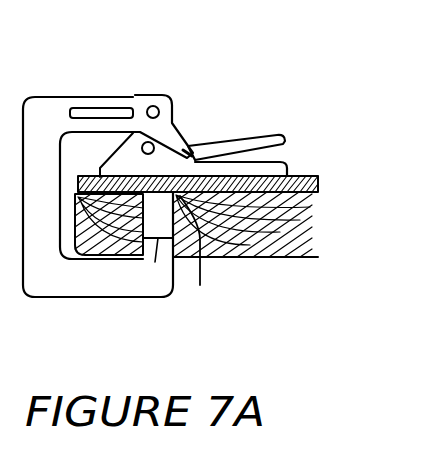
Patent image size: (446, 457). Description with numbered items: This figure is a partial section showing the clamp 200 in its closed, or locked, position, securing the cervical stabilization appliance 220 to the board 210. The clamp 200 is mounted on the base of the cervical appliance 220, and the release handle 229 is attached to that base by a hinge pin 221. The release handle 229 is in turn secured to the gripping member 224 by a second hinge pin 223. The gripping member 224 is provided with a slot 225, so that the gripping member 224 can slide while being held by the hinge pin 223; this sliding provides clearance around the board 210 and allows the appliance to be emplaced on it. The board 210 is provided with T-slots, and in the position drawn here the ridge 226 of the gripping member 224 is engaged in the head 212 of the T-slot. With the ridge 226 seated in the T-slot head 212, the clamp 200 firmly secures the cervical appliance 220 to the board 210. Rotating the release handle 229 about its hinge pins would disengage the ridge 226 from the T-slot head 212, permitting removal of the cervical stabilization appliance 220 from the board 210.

The clamp 200 is at (197, 142).
The board 210 is at (398, 236).
The head of T-slot 212 is at (200, 285).
The cervical stabilization appliance 220 is at (398, 180).
The hinge pin 221 is at (146, 143).
The hinge pin 223 is at (158, 106).
The gripping member 224 is at (120, 286).
The slot 225 is at (105, 108).
The ridge 226 is at (158, 238).
The release handle 229 is at (290, 141).